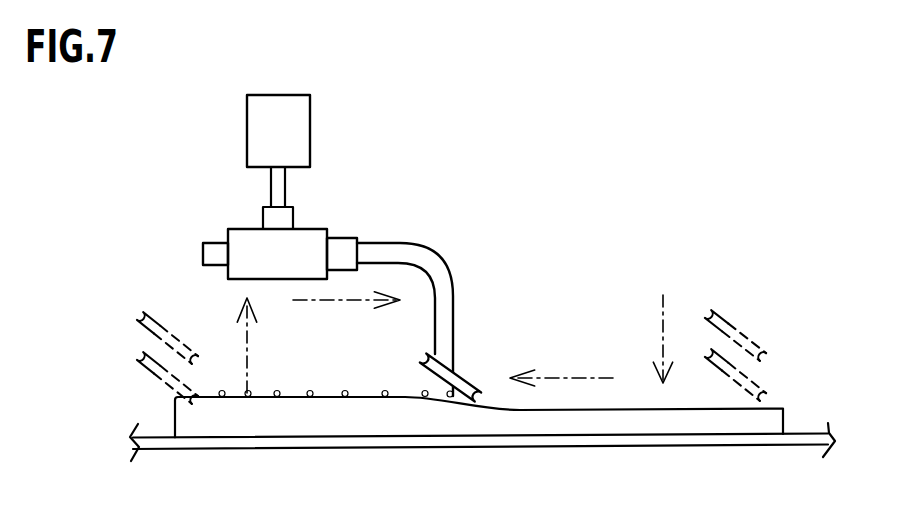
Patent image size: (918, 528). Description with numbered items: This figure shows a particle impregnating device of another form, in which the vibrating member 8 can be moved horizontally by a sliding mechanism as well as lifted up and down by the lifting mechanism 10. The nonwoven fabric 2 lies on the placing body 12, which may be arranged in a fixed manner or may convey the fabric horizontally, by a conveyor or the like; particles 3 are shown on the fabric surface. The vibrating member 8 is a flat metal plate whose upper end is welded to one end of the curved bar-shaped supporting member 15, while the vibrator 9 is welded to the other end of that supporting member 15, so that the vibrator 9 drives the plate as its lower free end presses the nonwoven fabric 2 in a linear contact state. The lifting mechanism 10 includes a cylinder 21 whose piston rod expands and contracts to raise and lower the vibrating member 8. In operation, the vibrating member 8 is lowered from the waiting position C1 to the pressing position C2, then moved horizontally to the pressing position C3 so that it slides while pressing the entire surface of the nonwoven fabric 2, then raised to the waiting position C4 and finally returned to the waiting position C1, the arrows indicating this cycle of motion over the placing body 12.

The nonwoven fabric 2 is at (172, 425).
The solder bumps / components on substrate 3 is at (343, 392).
The vibrating member 8 is at (472, 390).
The vibrator 9 is at (242, 229).
The lifting mechanism 10 is at (292, 174).
The placing body 12 is at (247, 450).
The supporting member 15 is at (430, 252).
The cylinder 21 is at (310, 114).
The waiting position C1 is at (758, 308).
The pressing position C2 is at (783, 373).
The pressing position C3 is at (133, 399).
The waiting position C4 is at (154, 292).